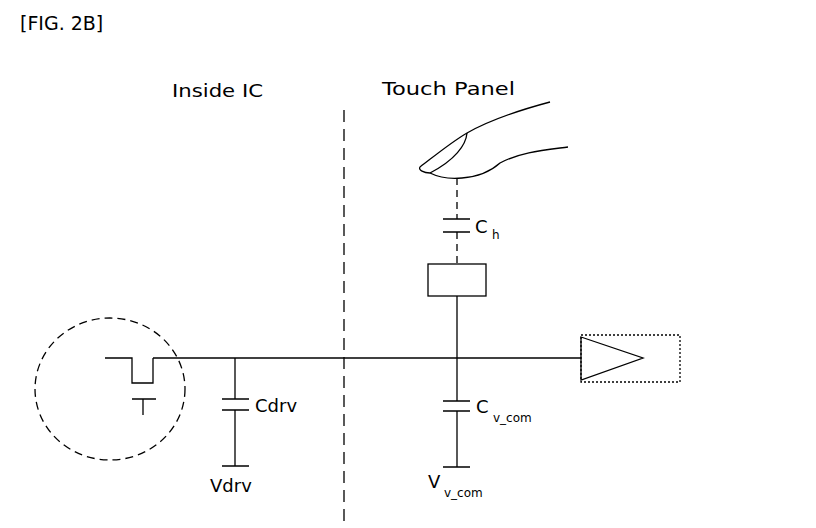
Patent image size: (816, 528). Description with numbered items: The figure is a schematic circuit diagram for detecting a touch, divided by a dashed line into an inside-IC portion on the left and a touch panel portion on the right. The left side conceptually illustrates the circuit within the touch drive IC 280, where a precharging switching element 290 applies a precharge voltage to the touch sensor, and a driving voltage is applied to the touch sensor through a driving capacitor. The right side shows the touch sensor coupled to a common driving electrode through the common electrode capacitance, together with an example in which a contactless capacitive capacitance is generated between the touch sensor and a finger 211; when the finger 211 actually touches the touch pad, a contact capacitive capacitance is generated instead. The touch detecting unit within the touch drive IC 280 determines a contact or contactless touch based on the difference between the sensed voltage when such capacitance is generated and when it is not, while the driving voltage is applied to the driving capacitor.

The finger 211 is at (525, 157).
The touch drive IC 280 is at (628, 383).
The precharging switching element 290 is at (108, 461).